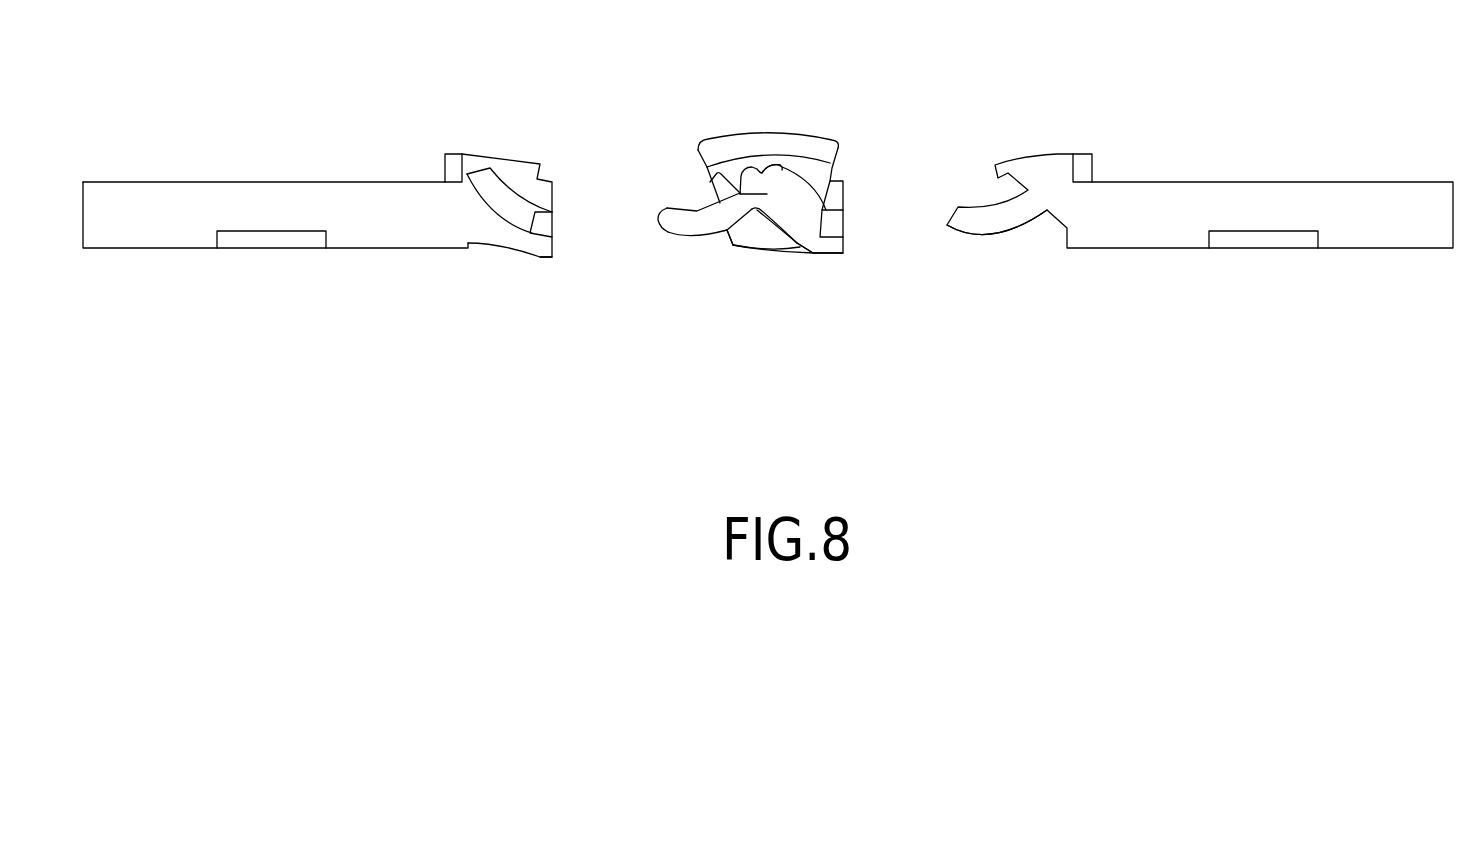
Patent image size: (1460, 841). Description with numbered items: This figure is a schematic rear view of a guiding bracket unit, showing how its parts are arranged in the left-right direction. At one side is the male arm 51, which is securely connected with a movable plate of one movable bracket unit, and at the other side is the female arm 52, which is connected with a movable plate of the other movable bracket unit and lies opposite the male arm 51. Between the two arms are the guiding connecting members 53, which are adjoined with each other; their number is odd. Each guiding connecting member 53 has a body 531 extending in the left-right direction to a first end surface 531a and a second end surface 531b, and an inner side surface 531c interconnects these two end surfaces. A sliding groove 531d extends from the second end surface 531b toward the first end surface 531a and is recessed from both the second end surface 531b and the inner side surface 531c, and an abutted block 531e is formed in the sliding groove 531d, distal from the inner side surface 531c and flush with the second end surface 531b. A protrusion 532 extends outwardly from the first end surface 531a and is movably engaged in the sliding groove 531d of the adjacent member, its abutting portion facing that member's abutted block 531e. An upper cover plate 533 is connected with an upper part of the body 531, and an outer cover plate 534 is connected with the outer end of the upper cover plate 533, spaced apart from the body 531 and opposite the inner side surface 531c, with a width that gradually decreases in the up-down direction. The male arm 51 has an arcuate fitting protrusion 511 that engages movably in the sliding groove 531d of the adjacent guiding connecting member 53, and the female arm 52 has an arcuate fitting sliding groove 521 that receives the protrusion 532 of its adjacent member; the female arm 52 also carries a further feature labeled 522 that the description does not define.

The male arm 51 is at (1200, 196).
The fitting protrusion 511 is at (997, 222).
The female arm 52 is at (317, 205).
The fitting sliding groove 521 is at (493, 200).
The lower engaging tab 522 is at (545, 232).
The guiding connecting member 53 is at (781, 194).
The body 531 is at (797, 220).
The first end surface 531a is at (775, 242).
The second end surface 531b is at (845, 198).
The inner side surface 531c is at (817, 243).
The sliding groove 531d is at (772, 178).
The abutted block 531e is at (837, 223).
The protrusion 532 is at (685, 220).
The upper cover plate 533 is at (810, 150).
The outer cover plate 534 is at (748, 243).